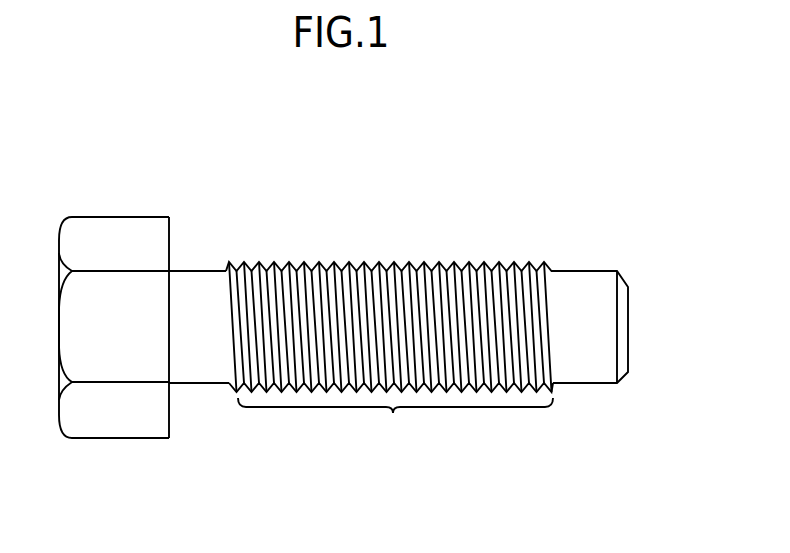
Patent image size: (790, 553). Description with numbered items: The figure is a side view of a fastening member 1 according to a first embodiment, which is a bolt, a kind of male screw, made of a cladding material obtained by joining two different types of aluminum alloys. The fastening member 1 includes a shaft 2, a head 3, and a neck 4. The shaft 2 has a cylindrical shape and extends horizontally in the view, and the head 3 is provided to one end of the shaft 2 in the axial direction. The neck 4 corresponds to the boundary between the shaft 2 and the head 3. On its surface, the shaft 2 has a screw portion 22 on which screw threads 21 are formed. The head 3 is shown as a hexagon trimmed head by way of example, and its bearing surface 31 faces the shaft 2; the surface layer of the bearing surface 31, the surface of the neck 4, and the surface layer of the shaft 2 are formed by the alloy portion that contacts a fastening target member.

The fastening member 1 is at (537, 165).
The shaft 2 is at (420, 262).
The screw threads 21 is at (514, 262).
The screw portion 22 is at (395, 421).
The head 3 is at (90, 232).
The bearing surface 31 is at (170, 425).
The neck 4 is at (172, 271).